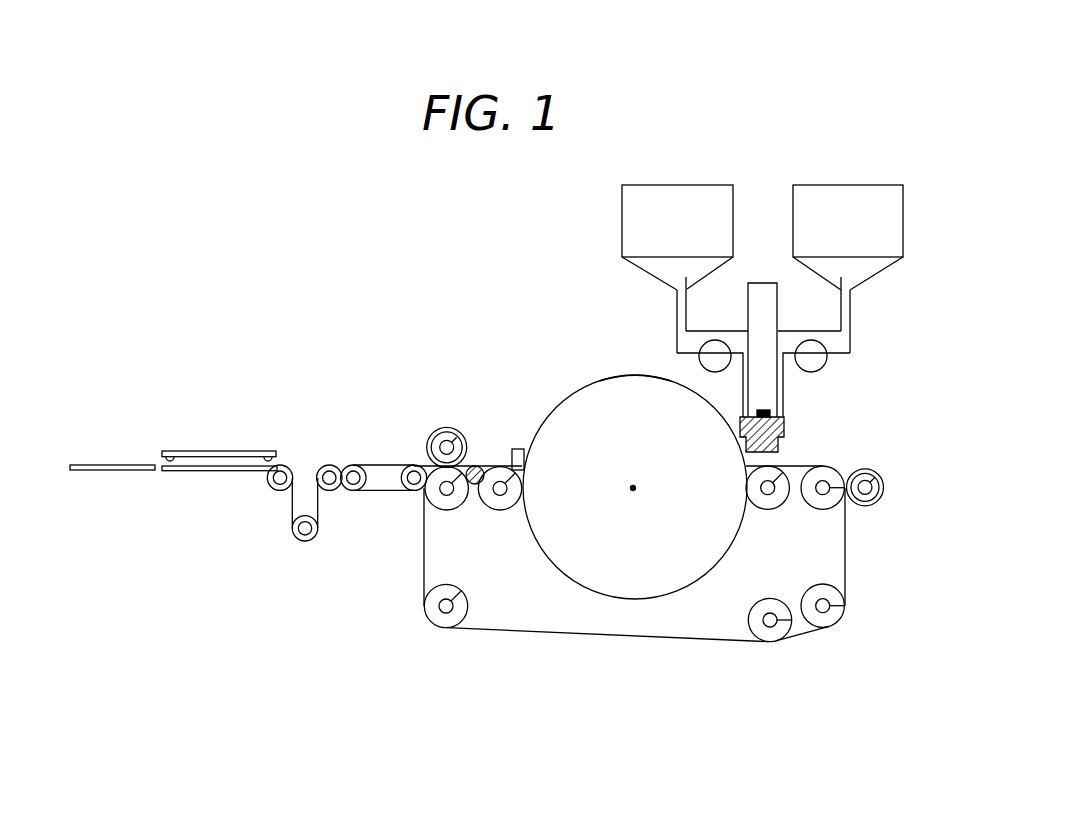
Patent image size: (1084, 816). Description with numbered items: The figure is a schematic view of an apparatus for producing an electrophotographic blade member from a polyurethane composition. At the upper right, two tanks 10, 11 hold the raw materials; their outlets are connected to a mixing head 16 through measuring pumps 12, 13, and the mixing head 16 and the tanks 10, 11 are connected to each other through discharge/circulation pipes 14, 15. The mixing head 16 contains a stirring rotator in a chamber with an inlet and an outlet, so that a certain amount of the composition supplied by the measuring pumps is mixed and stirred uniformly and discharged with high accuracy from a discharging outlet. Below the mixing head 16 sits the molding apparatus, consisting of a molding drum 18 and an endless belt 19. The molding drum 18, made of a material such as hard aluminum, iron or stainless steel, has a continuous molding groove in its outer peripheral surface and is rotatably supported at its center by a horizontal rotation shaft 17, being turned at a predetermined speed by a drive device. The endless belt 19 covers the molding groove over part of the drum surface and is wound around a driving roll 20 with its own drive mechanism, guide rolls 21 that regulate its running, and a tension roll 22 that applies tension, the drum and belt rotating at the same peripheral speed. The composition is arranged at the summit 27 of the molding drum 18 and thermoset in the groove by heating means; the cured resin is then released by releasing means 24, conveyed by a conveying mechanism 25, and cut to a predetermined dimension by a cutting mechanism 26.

The tank 10 is at (694, 183).
The tank 11 is at (865, 183).
The measuring pump 12 is at (718, 340).
The measuring pump 13 is at (824, 366).
The discharge/circulation pipe 14 is at (676, 305).
The discharge/circulation pipe 15 is at (851, 311).
The mixing head 16 is at (785, 443).
The horizontal rotation shaft 17 is at (634, 490).
The molding drum 18 is at (565, 398).
The endless belt 19 is at (603, 638).
The driving roll 20 is at (440, 429).
The guide roll 21 is at (495, 510).
The tension roll 22 is at (770, 642).
The releasing means 24 is at (515, 449).
The conveying mechanism 25 is at (350, 466).
The cutting mechanism 26 is at (216, 450).
The summit 27 is at (622, 375).